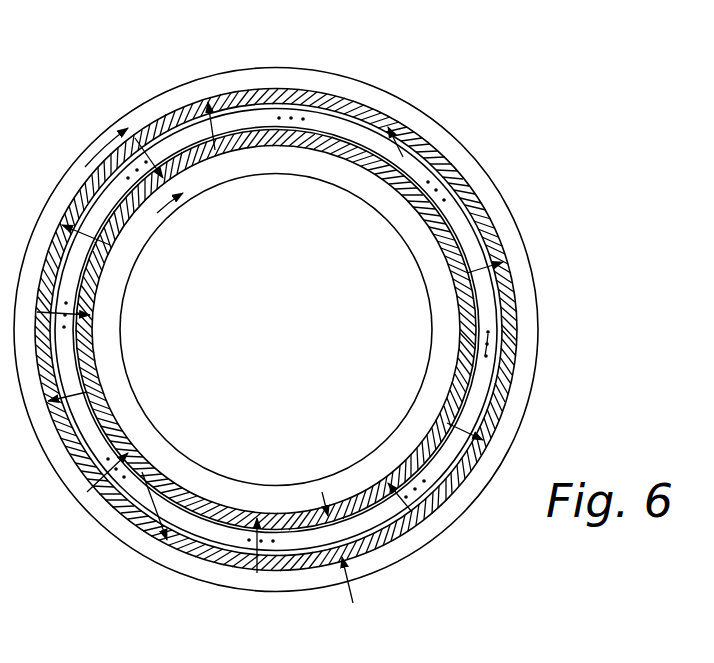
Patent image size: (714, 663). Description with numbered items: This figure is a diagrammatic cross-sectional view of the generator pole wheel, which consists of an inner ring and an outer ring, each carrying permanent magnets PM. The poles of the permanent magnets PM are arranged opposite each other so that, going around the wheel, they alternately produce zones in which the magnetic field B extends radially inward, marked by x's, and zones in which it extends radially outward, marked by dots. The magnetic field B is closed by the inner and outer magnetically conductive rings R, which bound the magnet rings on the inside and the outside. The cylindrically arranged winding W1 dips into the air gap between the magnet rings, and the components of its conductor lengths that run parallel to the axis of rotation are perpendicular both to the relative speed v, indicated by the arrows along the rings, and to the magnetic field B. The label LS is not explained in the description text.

The magnetically conductive rings R is at (233, 77).
The permanent magnets PM is at (430, 152).
The magnetic field B is at (267, 337).
The relative speed v is at (142, 160).
The winding W1 is at (488, 334).
The air gap / slot LS is at (310, 590).